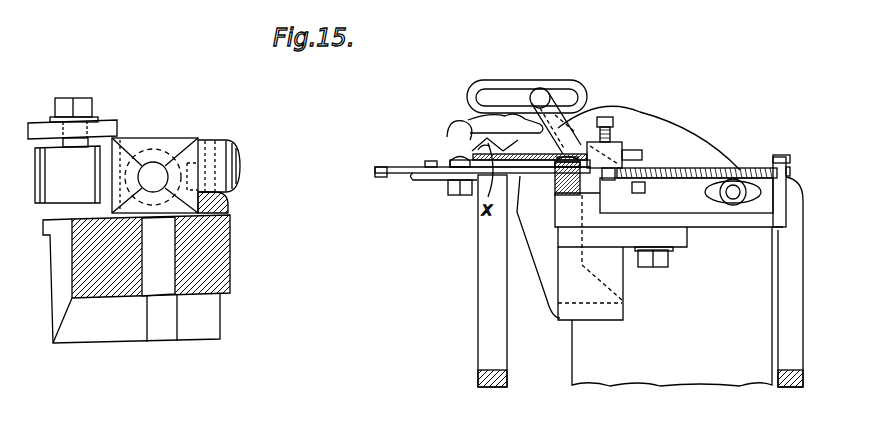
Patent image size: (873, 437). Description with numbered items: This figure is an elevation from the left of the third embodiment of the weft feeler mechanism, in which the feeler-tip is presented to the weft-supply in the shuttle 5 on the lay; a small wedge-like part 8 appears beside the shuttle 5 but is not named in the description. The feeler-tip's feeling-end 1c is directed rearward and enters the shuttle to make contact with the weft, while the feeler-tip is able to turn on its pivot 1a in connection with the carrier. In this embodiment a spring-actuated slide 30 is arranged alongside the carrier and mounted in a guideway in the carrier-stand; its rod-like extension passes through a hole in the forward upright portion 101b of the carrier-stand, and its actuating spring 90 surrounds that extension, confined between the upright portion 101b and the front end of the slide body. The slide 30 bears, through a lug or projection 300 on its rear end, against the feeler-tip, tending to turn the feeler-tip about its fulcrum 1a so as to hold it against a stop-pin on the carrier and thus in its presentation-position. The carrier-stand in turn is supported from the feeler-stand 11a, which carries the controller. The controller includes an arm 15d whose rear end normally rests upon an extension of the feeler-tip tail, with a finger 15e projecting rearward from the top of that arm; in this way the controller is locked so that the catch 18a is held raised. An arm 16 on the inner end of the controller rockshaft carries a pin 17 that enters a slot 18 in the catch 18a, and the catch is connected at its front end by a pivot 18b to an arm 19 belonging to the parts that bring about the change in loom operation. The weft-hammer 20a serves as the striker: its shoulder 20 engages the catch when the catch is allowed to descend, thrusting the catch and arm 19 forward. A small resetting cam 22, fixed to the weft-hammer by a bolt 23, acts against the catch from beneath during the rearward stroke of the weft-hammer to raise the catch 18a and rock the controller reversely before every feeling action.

The shuttle 5 is at (153, 138).
The wedge piece 8 is at (228, 202).
The pivot 1a is at (457, 163).
The feeling-end 1c is at (372, 169).
The lug or projection 300 is at (432, 162).
The arm 19 is at (395, 176).
The weft-hammer 20a is at (482, 323).
The spring-actuated slide 30 is at (555, 190).
The feeler-stand 11a is at (527, 252).
The shoulder 20 is at (512, 123).
The pin 17 is at (541, 89).
The resetting cam 22 is at (554, 114).
The slot 18 is at (566, 116).
The arm 16 is at (591, 139).
The catch 18a is at (653, 117).
The forward upright portion 101b is at (792, 143).
The actuating spring 90 is at (741, 165).
The pivot 18b is at (733, 195).
The finger 15e is at (477, 147).
The arm 15d is at (485, 143).
The bolt 23 is at (509, 144).